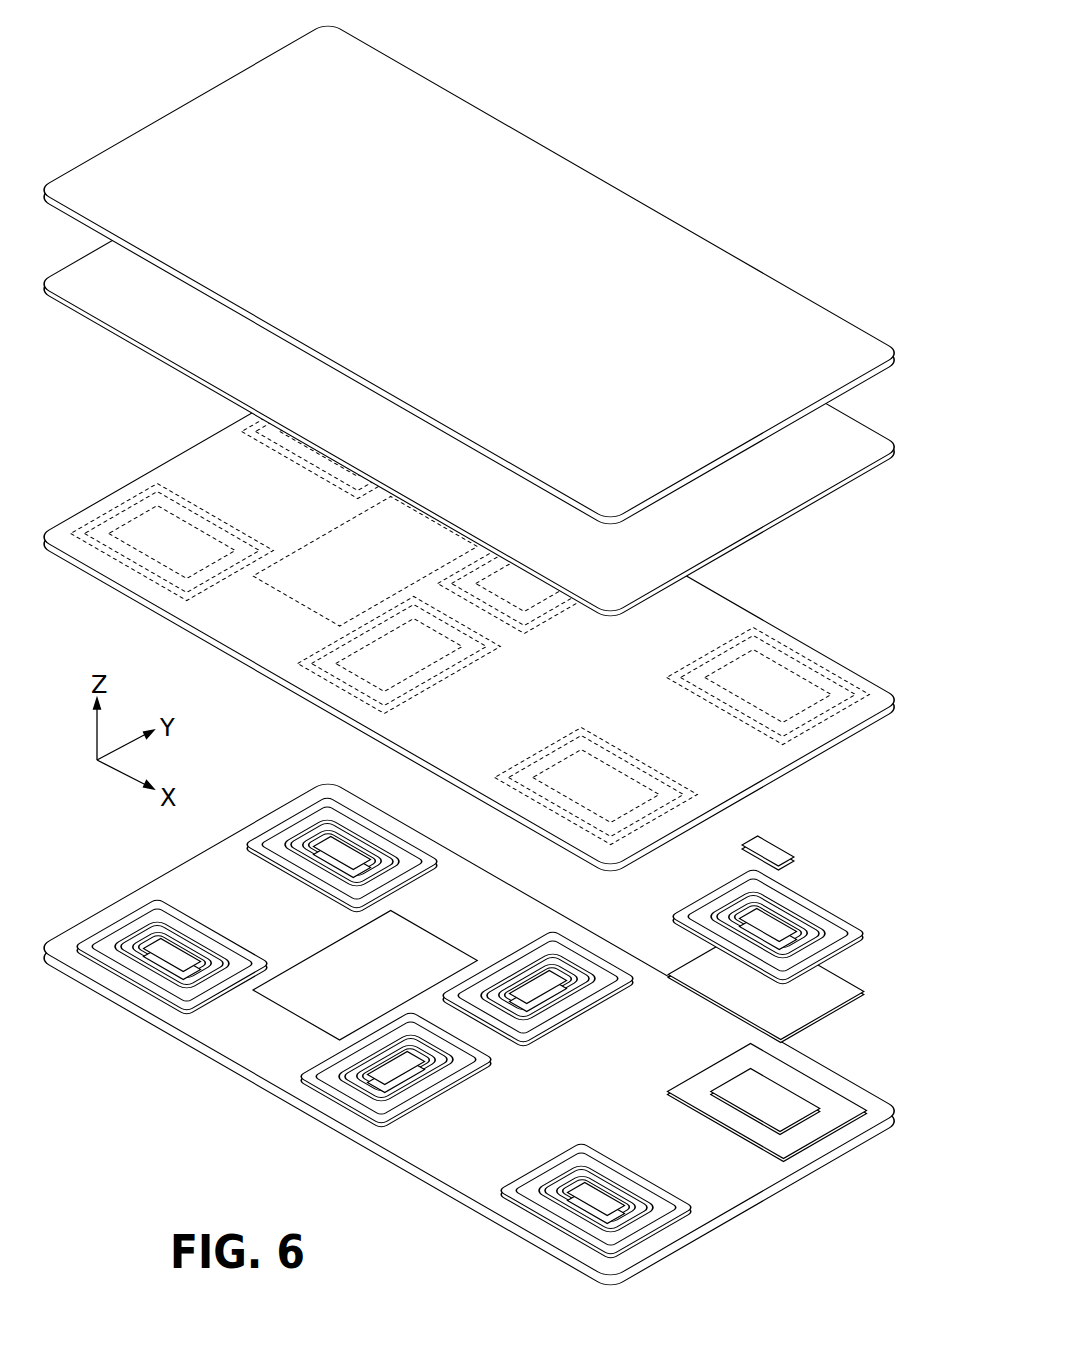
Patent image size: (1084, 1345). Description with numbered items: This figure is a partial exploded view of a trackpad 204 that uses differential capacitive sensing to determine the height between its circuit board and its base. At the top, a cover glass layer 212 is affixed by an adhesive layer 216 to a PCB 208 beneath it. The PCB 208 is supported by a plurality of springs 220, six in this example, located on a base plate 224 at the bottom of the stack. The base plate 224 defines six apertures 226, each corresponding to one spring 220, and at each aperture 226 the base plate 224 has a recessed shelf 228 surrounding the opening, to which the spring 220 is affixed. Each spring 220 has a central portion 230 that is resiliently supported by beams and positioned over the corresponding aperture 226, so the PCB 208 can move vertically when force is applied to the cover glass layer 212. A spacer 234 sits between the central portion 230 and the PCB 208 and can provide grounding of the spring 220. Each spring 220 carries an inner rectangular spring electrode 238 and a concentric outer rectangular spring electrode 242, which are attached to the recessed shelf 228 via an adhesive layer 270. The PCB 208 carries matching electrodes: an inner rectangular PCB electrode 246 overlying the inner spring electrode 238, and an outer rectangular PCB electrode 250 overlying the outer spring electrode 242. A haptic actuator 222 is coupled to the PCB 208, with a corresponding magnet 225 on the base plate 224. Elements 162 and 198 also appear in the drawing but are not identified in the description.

The trackpad 204 is at (140, 34).
The cover glass layer 212 is at (880, 332).
The adhesive layer 216 is at (880, 425).
The PCB 208 is at (880, 672).
The outer rectangular PCB electrode 250 is at (183, 498).
The inner rectangular PCB electrode 246 is at (225, 528).
The haptic actuator 222 is at (307, 599).
The mass 162 is at (180, 950).
The spring 220 is at (519, 1028).
The magnet 225 is at (297, 1017).
The spacer 234 is at (790, 845).
The inner rectangular spring electrode 238 is at (722, 898).
The outer rectangular spring electrode 242 is at (690, 905).
The central portion 230 is at (773, 927).
The adhesive layer 270 is at (855, 962).
The adhesive layer 198 is at (822, 958).
The aperture 226 is at (728, 1082).
The recessed shelf 228 is at (739, 1091).
The base plate 224 is at (880, 1085).